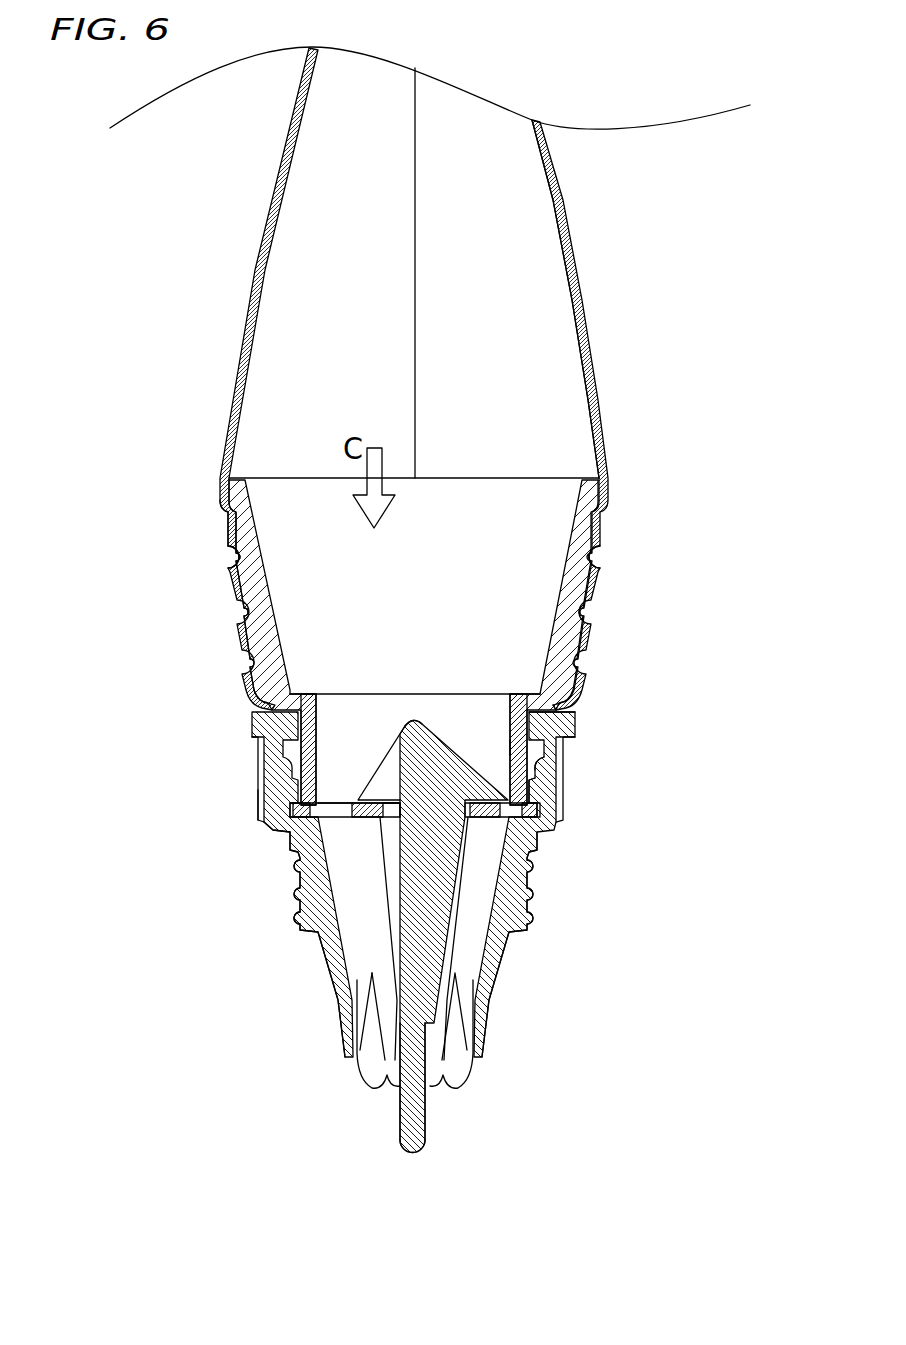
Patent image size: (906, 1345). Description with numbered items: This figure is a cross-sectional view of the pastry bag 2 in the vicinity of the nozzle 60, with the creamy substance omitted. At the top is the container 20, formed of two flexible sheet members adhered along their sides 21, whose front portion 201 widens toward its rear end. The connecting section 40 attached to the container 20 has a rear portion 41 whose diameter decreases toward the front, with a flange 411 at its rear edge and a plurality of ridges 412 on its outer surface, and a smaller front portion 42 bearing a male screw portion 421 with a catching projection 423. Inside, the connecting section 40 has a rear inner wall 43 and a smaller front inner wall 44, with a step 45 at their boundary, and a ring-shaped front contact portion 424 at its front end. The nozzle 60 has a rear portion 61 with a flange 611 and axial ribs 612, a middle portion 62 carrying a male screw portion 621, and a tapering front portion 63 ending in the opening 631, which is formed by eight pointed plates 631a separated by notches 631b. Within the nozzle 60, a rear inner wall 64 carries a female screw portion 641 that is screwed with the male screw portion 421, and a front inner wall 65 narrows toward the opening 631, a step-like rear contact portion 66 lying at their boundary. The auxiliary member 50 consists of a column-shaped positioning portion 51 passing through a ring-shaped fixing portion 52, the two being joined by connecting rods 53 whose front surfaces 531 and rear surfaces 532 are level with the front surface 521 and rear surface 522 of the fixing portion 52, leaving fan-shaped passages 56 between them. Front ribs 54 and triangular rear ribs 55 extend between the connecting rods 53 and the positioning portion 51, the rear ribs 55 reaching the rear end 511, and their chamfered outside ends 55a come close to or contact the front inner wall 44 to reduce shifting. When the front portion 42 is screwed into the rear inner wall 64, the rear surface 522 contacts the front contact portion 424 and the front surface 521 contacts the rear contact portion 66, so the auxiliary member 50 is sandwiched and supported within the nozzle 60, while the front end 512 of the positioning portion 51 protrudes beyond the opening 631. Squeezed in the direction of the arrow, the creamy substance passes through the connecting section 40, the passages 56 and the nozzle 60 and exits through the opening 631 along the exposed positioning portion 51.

The pastry bag 2 is at (715, 233).
The container 20 is at (581, 187).
The sides 21 is at (415, 285).
The front portion 201 is at (540, 325).
The connecting section 40 is at (471, 466).
The flange 411 is at (238, 478).
The rear portion 41 is at (226, 520).
The ridges 412 is at (232, 559).
The rear inner wall 43 is at (560, 581).
The front portion 42 is at (300, 714).
The catching projection 423 is at (568, 722).
The front contact portion 424 is at (307, 795).
The step 45 is at (519, 760).
The flange 611 is at (262, 718).
The rear portion 61 is at (259, 745).
The ribs 612 is at (258, 796).
The middle portion 62 is at (325, 950).
The male screw portion 621 is at (298, 925).
The rear contact portion 66 is at (283, 825).
The nozzle 60 is at (576, 802).
The rear inner wall 64 is at (548, 712).
The female screw portion 641 is at (562, 752).
The male screw portion 421 is at (542, 780).
The front inner wall 44 is at (511, 747).
The front inner wall 65 is at (529, 863).
The connecting rods 53 is at (399, 803).
The fixing portion 52 is at (290, 808).
The front surface 521 is at (300, 812).
The rear surface 522 is at (298, 803).
The front surfaces 531 is at (384, 818).
The rear surfaces 532 is at (388, 800).
The passages 56 is at (330, 792).
The outside end 55a is at (537, 806).
The auxiliary member 50 is at (466, 914).
The rear ribs 55 is at (458, 755).
The rear end 511 is at (412, 716).
The positioning portion 51 is at (428, 1140).
The front end 512 is at (415, 1150).
The front ribs 54 is at (397, 933).
The front portion 63 is at (345, 990).
The pointed plates 631a is at (368, 1070).
The notches 631b is at (383, 1105).
The opening 631 is at (441, 1123).